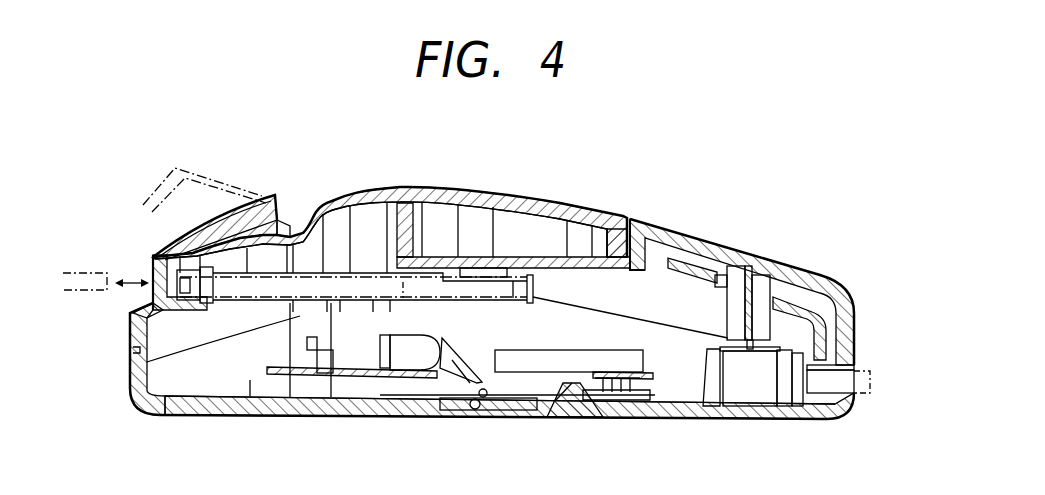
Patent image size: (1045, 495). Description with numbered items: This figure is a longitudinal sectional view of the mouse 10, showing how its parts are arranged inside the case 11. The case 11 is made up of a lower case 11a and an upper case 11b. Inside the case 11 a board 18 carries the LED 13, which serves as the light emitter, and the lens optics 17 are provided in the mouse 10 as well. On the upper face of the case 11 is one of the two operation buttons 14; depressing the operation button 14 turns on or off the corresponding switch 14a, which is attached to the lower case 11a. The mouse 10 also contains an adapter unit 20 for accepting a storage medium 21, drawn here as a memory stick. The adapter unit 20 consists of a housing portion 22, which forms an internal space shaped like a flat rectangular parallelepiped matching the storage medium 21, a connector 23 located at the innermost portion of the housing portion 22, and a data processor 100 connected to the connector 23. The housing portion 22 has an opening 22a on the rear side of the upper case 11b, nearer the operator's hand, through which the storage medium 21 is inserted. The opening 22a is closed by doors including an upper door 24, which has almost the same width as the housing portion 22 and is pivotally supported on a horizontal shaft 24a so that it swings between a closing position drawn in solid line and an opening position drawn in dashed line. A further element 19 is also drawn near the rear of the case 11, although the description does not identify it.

The data processor 100 is at (250, 414).
The mouse 10 is at (701, 216).
The case 11 is at (479, 185).
The lower case 11a is at (626, 412).
The upper case 11b is at (600, 215).
The LED 13 is at (396, 360).
The operation button 14 is at (738, 258).
The switch 14a is at (741, 398).
The lens optics 17 is at (468, 381).
The board 18 is at (295, 345).
The terminal 19 is at (860, 366).
The adapter unit 20 is at (363, 264).
The storage medium 21 is at (405, 278).
The housing portion 22 is at (365, 318).
The opening 22a is at (150, 292).
The connector 23 is at (503, 268).
The upper door 24 is at (207, 226).
The horizontal shaft 24a is at (288, 248).